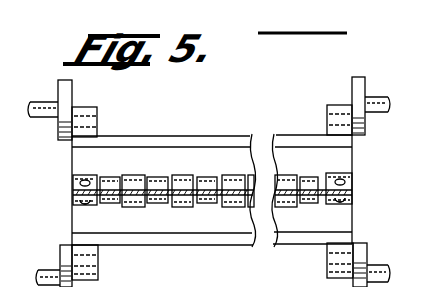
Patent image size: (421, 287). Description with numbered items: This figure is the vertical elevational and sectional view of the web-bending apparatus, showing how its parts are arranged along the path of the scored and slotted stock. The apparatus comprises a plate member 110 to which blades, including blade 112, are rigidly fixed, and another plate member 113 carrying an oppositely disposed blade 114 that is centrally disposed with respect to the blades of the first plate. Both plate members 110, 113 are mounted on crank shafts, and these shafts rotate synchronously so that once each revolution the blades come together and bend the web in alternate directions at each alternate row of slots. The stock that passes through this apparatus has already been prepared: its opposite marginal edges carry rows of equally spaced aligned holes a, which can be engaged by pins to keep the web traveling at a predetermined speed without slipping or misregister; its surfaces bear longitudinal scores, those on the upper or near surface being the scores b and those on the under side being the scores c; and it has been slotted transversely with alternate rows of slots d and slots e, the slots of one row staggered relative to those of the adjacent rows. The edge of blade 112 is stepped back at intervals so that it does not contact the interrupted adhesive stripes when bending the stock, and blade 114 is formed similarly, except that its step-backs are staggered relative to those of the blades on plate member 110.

The plate member 110 is at (221, 143).
The blade 112 is at (233, 152).
The plate member 113 is at (221, 243).
The blade 114 is at (241, 218).
The holes a is at (80, 183).
The scores b is at (122, 177).
The scores c is at (167, 203).
The slots d is at (146, 166).
The slots e is at (91, 207).